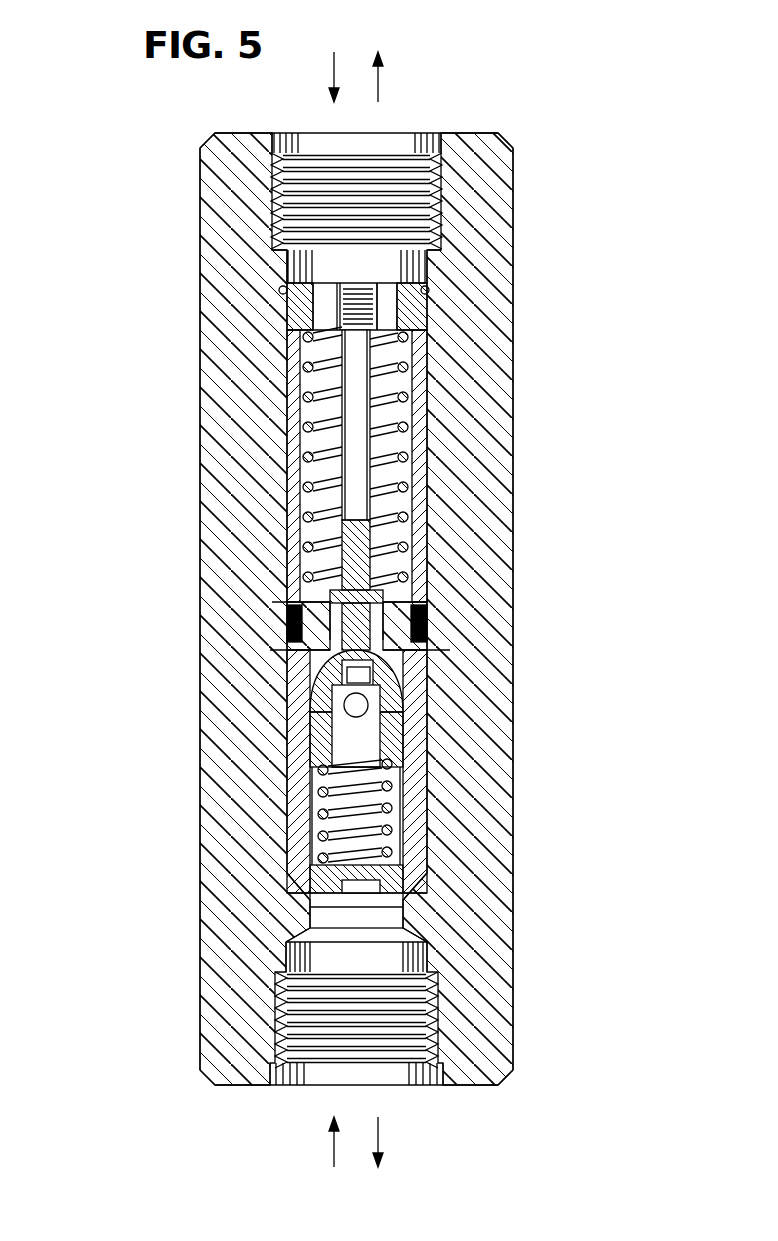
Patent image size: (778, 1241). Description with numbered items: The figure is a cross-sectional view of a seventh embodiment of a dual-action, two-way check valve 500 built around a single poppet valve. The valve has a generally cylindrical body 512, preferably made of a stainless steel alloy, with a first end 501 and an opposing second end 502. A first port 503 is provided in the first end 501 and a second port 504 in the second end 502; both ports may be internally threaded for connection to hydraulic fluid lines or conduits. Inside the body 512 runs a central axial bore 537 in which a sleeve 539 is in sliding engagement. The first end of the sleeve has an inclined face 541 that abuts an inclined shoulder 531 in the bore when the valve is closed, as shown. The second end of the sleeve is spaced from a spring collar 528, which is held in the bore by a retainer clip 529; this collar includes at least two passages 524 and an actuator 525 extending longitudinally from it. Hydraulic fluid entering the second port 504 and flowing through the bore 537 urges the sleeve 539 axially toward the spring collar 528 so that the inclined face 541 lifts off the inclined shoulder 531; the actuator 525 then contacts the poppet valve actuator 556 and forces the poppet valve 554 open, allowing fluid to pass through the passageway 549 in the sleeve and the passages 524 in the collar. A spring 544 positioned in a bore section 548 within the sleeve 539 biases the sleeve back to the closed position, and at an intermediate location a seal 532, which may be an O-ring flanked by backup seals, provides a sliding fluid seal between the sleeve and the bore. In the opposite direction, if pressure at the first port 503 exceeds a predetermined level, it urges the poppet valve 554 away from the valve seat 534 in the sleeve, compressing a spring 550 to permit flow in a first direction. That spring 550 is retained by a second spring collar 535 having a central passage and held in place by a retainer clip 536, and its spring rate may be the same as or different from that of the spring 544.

The 2-way check valve 500 is at (527, 203).
The first end 501 is at (247, 133).
The second end 502 is at (467, 1085).
The first port 503 is at (395, 138).
The second port 504 is at (318, 1082).
The body 512 is at (505, 527).
The passages 524 is at (305, 305).
The actuator 525 is at (342, 480).
The spring collar 528 is at (418, 337).
The retainer clip 529 is at (288, 291).
The inclined shoulder 531 is at (310, 917).
The seal 532 is at (428, 625).
The valve seat 534 is at (330, 688).
The spring collar 535 is at (392, 912).
The retainer clip 536 is at (310, 902).
The central axial bore 537 is at (400, 267).
The sleeve 539 is at (293, 433).
The inclined face 541 is at (313, 887).
The spring 544 is at (415, 432).
The bore section 548 is at (403, 473).
The passageway 549 is at (378, 604).
The spring 550 is at (380, 798).
The poppet valve 554 is at (327, 650).
The poppet valve actuator 556 is at (340, 608).